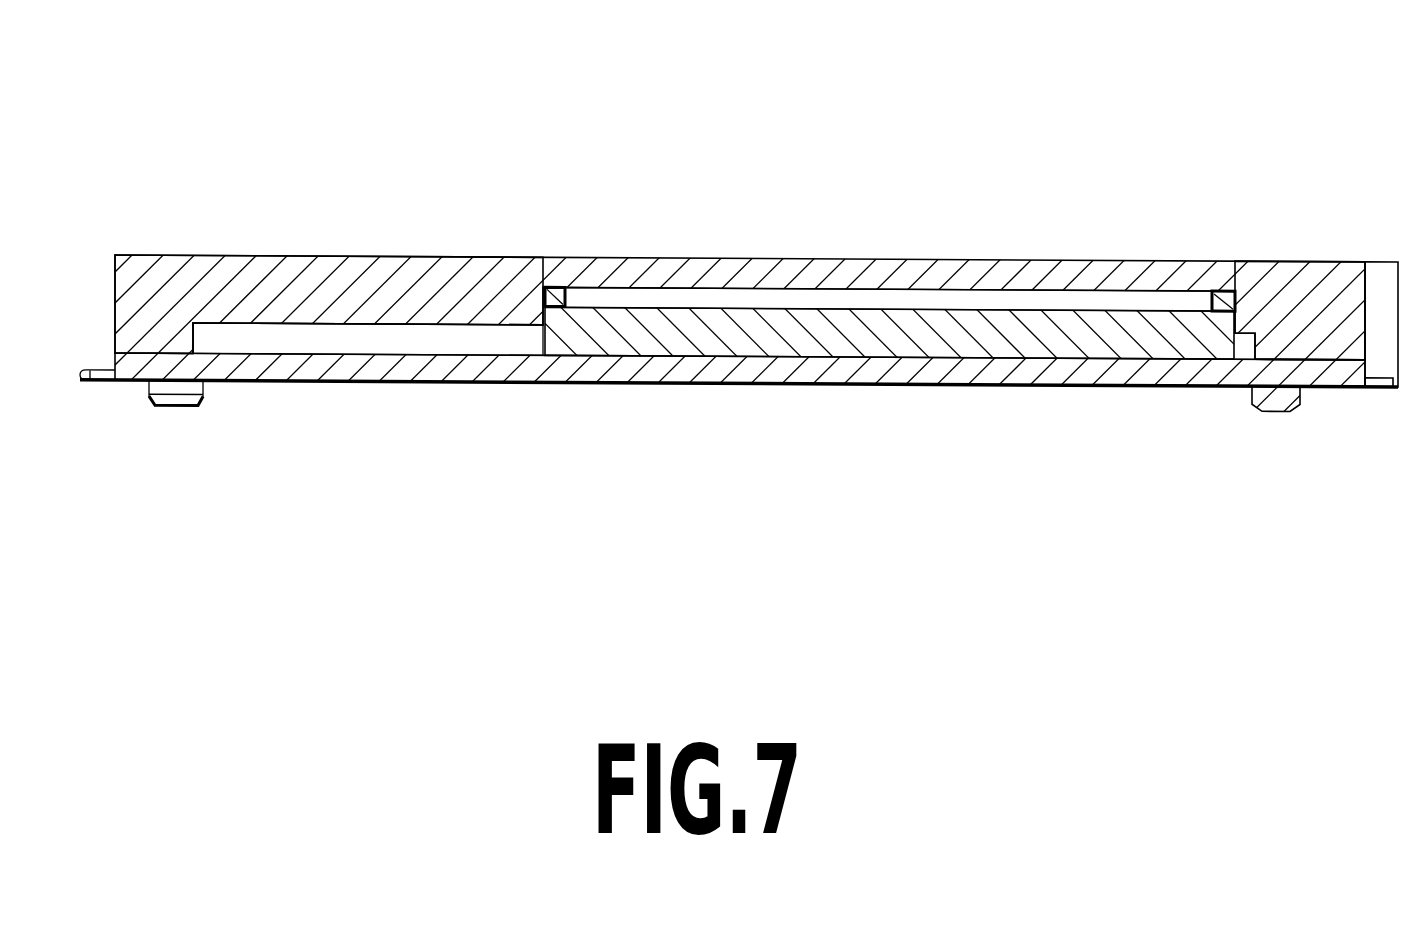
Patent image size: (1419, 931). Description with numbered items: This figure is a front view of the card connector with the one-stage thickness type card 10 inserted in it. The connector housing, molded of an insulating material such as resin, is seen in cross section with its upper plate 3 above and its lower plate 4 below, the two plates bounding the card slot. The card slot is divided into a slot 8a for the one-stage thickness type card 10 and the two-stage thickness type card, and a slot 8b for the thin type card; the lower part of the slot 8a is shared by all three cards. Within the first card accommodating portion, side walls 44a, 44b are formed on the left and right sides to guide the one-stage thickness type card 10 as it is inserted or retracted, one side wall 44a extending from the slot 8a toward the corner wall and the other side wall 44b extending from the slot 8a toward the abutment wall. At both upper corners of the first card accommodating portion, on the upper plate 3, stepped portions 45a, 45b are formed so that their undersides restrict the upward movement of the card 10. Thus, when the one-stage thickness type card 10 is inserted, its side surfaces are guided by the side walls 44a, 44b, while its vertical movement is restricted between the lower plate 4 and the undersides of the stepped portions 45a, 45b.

The upper plate 3 is at (658, 258).
The lower plate 4 is at (606, 383).
The slot for the 1-stage thickness type card and 2-stage thickness type card 8a is at (853, 298).
The slot for the thin type card 8b is at (371, 340).
The 1-stage thickness type card 10 is at (1108, 330).
The side wall 44a is at (1238, 293).
The side wall 44b is at (543, 320).
The stepped portion 45a is at (1232, 292).
The stepped portion 45b is at (562, 287).